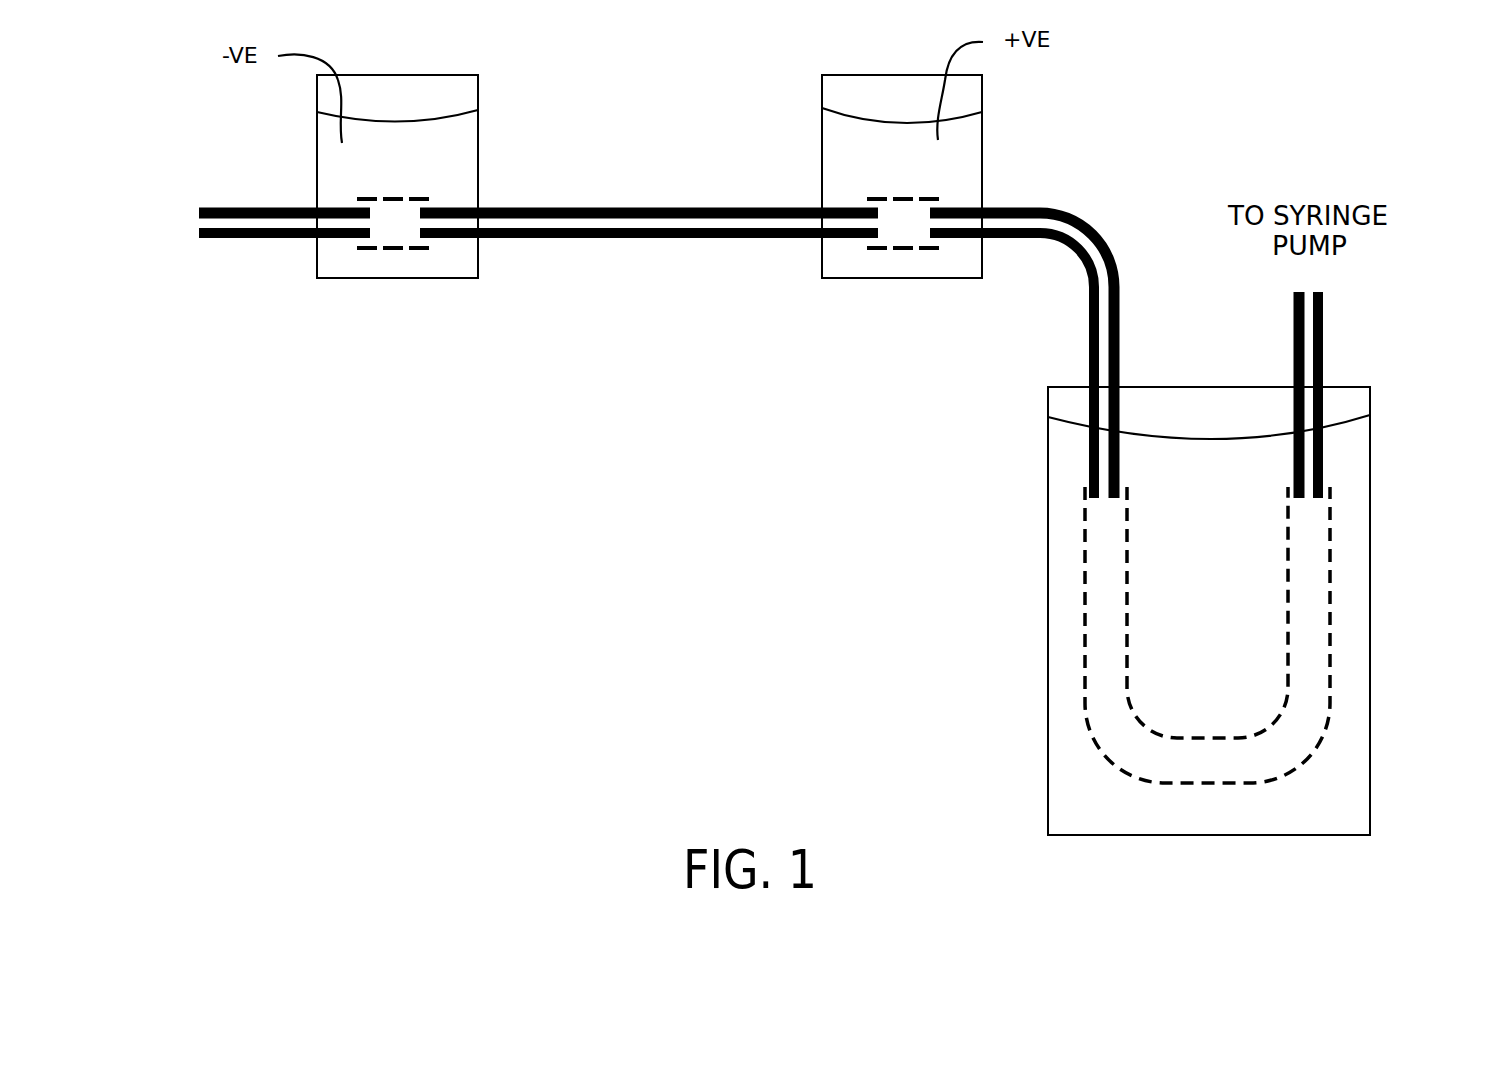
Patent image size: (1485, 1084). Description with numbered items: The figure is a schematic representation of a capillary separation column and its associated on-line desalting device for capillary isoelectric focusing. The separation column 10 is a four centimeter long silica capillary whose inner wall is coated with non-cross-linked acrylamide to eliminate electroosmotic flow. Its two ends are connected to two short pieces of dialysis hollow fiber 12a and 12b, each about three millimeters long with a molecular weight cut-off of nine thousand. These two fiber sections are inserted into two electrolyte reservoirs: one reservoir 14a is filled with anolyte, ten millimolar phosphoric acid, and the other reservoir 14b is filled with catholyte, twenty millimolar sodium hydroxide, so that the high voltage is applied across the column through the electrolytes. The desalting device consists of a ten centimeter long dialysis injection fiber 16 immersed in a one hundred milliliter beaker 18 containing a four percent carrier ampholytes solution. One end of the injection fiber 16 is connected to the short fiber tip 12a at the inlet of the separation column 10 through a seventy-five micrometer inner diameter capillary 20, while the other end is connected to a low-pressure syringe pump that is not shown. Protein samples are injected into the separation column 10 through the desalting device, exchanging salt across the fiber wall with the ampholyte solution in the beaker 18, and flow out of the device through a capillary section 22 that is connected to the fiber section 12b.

The separation column 10 is at (588, 238).
The dialysis hollow fiber 12a is at (900, 248).
The dialysis hollow fiber 12b is at (398, 250).
The electrolyte reservoir 14a is at (982, 183).
The electrolyte reservoir 14b is at (478, 170).
The injection fiber 16 is at (1083, 712).
The beaker 18 is at (1372, 575).
The capillary 20 is at (1121, 332).
The capillary section 22 is at (213, 240).